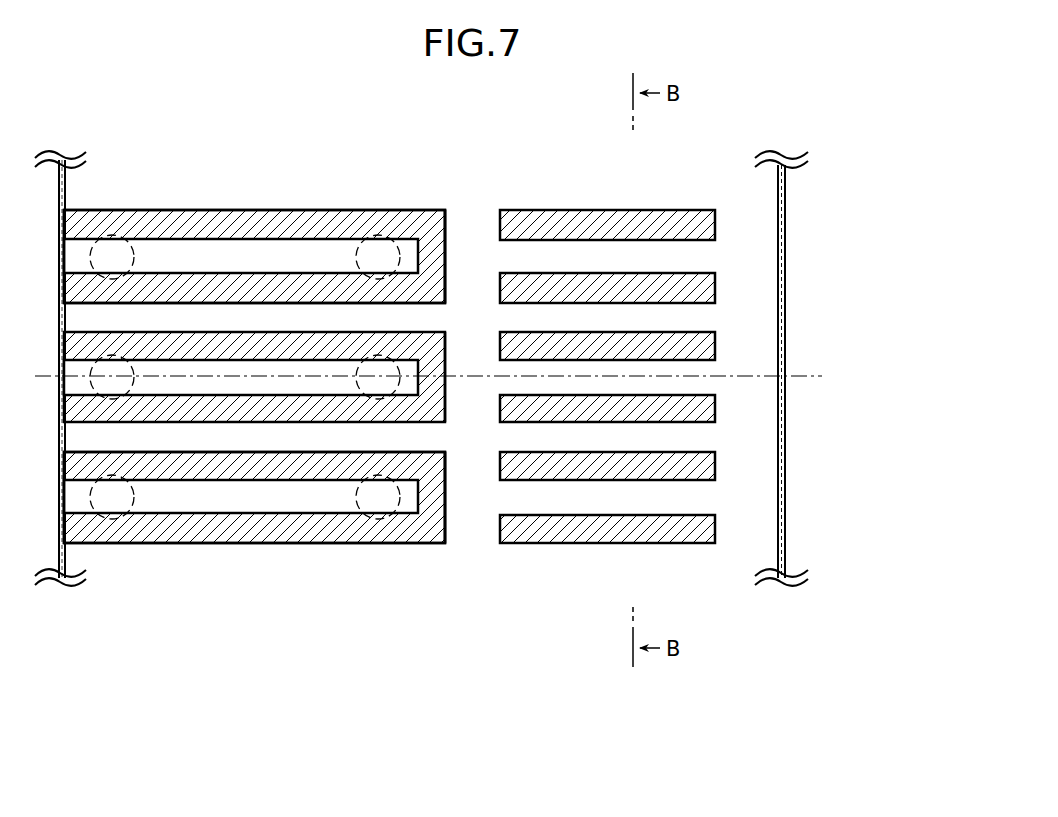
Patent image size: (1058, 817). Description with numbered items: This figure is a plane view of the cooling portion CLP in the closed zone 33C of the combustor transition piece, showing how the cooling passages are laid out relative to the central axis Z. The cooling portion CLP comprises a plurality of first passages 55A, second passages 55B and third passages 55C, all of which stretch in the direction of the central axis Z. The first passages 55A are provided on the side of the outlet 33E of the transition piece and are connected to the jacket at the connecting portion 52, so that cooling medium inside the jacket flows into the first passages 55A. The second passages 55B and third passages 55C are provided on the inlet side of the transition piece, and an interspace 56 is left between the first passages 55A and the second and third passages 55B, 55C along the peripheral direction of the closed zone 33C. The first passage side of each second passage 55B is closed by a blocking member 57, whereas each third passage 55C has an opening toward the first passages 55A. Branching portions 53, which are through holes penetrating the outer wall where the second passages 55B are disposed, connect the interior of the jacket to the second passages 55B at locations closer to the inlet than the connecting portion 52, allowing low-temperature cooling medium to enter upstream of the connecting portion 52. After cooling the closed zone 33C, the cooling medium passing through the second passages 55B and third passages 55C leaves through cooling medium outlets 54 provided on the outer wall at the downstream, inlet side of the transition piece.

The cooling portion CLP is at (357, 645).
The second passages 55B is at (210, 497).
The third passages 55C is at (275, 318).
The first passages 55A is at (523, 503).
The branching portions 53 is at (368, 490).
The cooling medium outlets 54 is at (128, 262).
The blocking member 57 is at (447, 497).
The interspace 56 is at (473, 503).
The closed zone 33C is at (836, 153).
The outlet 33E is at (791, 270).
The connecting portion 52 is at (756, 366).
The central axis Z is at (438, 378).